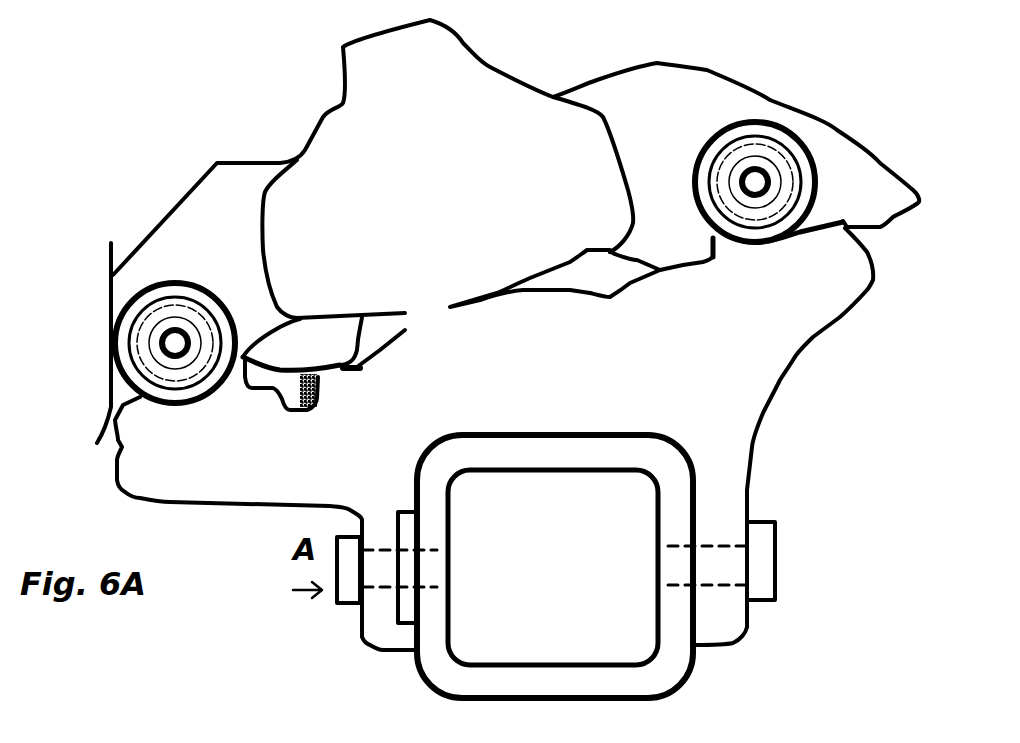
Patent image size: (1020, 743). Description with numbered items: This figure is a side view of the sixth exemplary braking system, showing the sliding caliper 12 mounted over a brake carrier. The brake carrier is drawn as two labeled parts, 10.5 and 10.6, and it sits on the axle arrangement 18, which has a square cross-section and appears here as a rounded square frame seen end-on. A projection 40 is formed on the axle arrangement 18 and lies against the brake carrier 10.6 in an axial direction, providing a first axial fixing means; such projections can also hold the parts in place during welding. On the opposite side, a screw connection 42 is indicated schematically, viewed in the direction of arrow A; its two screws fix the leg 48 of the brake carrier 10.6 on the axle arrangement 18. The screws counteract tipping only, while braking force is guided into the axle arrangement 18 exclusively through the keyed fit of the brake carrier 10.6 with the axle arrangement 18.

The sliding caliper 12 is at (763, 90).
The first housing part 10.5 is at (414, 405).
The brake carrier 10.6 is at (793, 362).
The axle arrangement 18 is at (687, 677).
The projection 40 is at (393, 602).
The screw connection 42 is at (775, 537).
The leg 48 is at (737, 643).